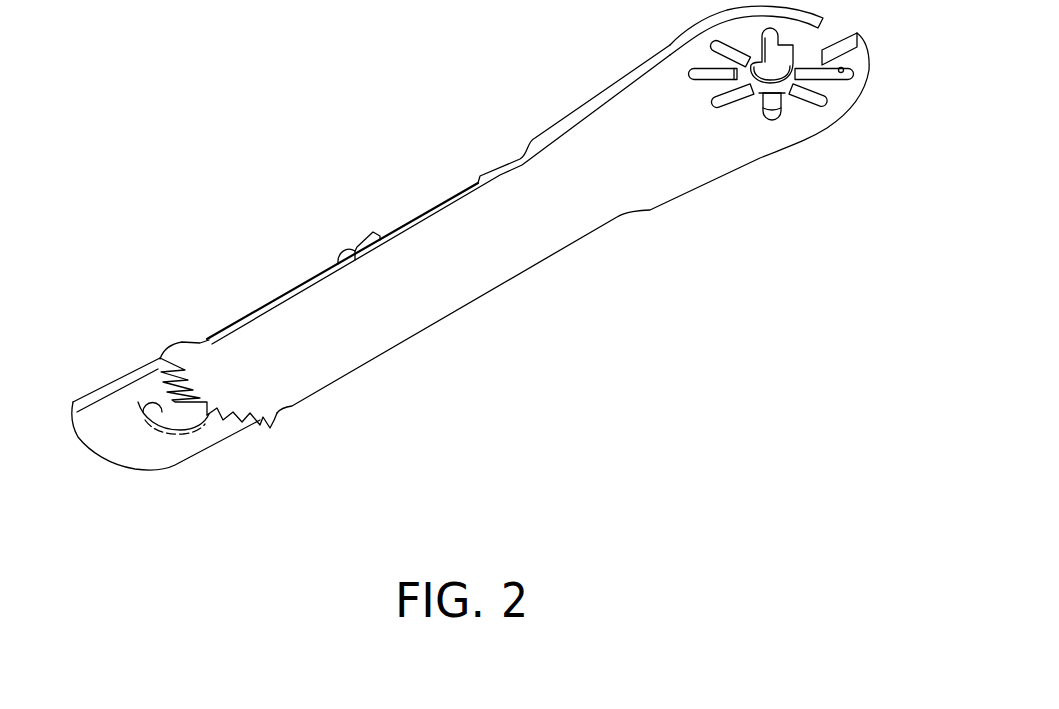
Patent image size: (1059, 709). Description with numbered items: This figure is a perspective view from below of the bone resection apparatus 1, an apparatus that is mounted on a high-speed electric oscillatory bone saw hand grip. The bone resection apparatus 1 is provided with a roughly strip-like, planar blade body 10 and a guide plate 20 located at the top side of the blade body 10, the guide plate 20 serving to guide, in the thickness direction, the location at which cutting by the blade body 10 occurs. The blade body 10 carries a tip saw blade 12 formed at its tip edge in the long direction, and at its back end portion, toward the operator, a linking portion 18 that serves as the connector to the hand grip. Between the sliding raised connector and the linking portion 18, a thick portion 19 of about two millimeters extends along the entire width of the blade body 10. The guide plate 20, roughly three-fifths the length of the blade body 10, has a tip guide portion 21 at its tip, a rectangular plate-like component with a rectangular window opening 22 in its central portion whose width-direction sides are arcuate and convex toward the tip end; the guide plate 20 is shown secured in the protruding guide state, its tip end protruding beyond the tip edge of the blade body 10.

The bone resection apparatus 1 is at (328, 176).
The blade body 10 is at (527, 268).
The tip saw blade 12 is at (260, 430).
The linking portion 18 is at (770, 157).
The thick portion 19 is at (573, 118).
The guide plate 20 is at (117, 373).
The tip guide portion 21 is at (137, 468).
The window opening 22 is at (140, 402).